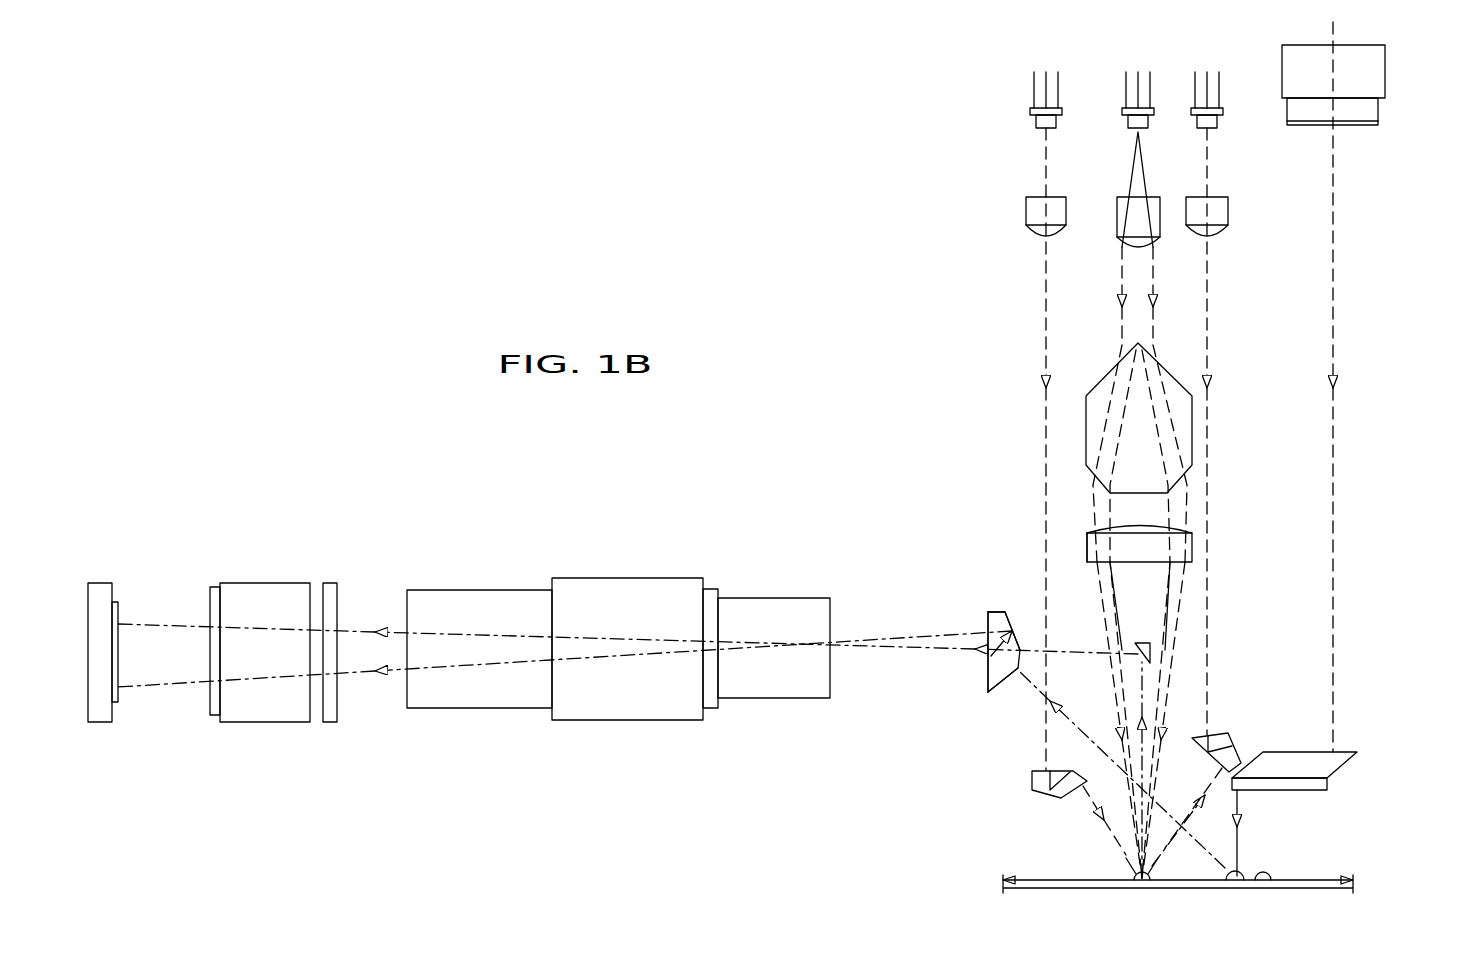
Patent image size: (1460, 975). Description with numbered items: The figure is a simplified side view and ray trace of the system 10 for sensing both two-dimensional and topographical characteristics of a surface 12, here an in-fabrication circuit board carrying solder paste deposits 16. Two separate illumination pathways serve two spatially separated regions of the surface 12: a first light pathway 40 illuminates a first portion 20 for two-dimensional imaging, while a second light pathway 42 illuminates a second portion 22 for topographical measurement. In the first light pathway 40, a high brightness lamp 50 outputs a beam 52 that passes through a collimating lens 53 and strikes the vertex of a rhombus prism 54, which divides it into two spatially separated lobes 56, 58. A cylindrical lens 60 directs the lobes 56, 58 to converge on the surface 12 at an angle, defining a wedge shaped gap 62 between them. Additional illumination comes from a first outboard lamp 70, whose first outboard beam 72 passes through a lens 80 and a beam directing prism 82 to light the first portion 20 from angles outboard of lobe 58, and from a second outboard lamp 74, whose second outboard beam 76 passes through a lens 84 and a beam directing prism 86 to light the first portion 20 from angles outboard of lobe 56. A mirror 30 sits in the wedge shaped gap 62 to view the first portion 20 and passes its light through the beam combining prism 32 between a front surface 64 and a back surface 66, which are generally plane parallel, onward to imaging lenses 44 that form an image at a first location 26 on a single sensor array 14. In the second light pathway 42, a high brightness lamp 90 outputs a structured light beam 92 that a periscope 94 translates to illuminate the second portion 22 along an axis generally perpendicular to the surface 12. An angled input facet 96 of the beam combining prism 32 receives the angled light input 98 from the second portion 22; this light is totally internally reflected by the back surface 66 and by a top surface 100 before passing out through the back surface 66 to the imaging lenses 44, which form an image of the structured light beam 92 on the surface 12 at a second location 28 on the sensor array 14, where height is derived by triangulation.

The system 10 is at (883, 318).
The surface 12 is at (1316, 878).
The sensor array 14 is at (97, 583).
The solder paste deposits 16 is at (1222, 876).
The first portion 20 is at (1113, 863).
The second portion 22 is at (1258, 858).
The first location 26 is at (142, 598).
The second location 28 is at (132, 706).
The mirror 30 is at (1130, 648).
The beam combining prism 32 is at (986, 618).
The light pathway 40 is at (1232, 326).
The light pathway 42 is at (1362, 226).
The imaging lenses 44 is at (840, 573).
The high brightness lamp 50 is at (1122, 110).
The beam 52 is at (1133, 165).
The collimating lens 53 is at (1120, 218).
The rhombus prism 54 is at (1098, 378).
The lobe 56 is at (1172, 647).
The lobe 58 is at (1103, 597).
The cylindrical lens 60 is at (1160, 541).
The wedge shaped gap 62 is at (1142, 606).
The front surface 64 is at (1020, 652).
The back surface 66 is at (988, 676).
The first outboard lamp 70 is at (1030, 110).
The first outboard beam 72 is at (1044, 165).
The second outboard lamp 74 is at (1222, 110).
The second outboard beam 76 is at (1208, 165).
The lens 80 is at (1026, 210).
The beam directing prism 82 is at (1032, 780).
The lens 84 is at (1228, 210).
The beam directing prism 86 is at (1222, 735).
The high brightness lamp 90 is at (1284, 66).
The structured light beam 92 is at (1334, 560).
The periscope 94 is at (1285, 752).
The input facet 96 is at (1000, 694).
The angled light input 98 is at (1077, 727).
The top surface 100 is at (1003, 612).